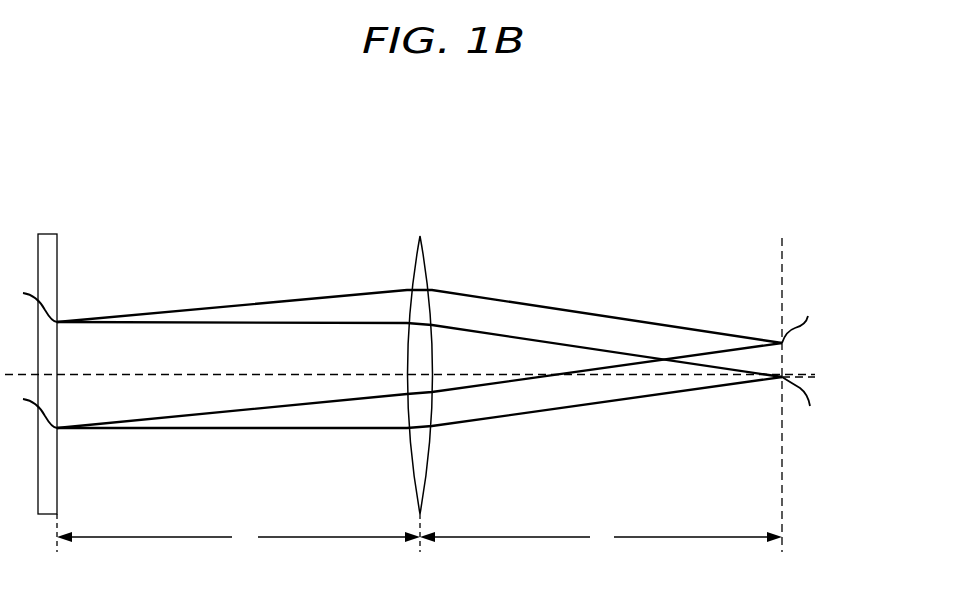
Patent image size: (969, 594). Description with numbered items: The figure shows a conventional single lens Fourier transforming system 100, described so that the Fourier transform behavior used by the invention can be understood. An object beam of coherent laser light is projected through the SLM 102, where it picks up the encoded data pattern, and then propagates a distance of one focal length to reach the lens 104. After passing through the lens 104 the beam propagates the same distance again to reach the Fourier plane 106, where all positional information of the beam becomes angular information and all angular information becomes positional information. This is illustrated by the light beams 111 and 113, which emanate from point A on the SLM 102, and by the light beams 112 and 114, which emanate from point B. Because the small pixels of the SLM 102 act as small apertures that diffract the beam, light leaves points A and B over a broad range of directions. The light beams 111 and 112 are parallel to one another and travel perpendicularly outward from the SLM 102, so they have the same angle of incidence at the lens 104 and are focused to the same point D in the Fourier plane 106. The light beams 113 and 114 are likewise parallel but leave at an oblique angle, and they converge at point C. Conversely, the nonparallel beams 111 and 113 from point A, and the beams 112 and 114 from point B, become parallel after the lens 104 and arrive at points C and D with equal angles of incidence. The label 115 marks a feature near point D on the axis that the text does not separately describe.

The single lens Fourier transforming system 100 is at (120, 118).
The SLM 102 is at (51, 233).
The lens 104 is at (421, 236).
The Fourier plane 106 is at (783, 238).
The light beam 111 is at (163, 325).
The light beam 112 is at (272, 431).
The light beam 113 is at (241, 304).
The light beam 114 is at (148, 418).
The optical axis extension / focal point D 115 is at (815, 377).